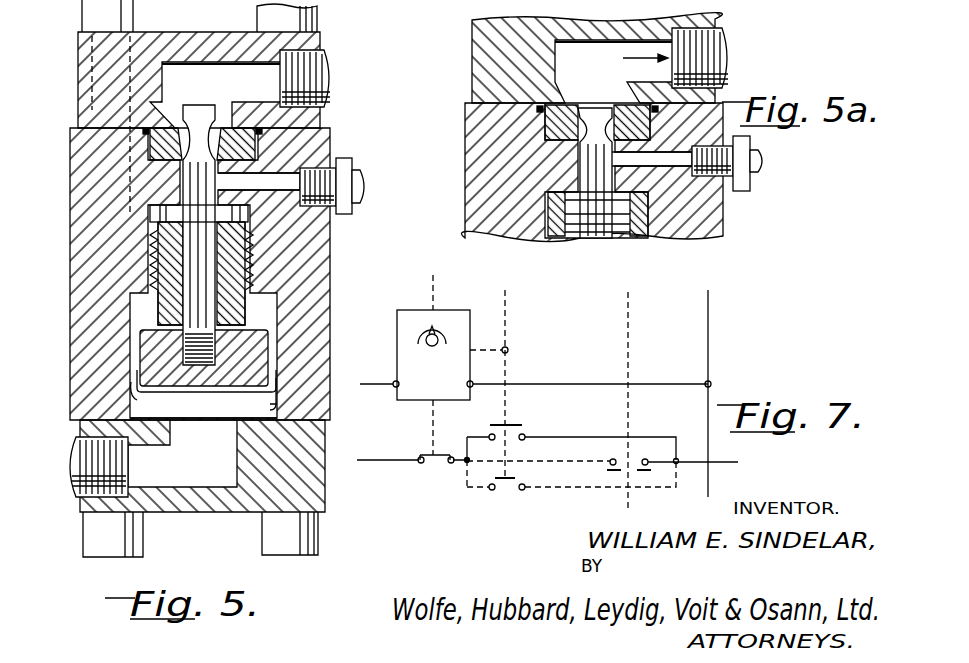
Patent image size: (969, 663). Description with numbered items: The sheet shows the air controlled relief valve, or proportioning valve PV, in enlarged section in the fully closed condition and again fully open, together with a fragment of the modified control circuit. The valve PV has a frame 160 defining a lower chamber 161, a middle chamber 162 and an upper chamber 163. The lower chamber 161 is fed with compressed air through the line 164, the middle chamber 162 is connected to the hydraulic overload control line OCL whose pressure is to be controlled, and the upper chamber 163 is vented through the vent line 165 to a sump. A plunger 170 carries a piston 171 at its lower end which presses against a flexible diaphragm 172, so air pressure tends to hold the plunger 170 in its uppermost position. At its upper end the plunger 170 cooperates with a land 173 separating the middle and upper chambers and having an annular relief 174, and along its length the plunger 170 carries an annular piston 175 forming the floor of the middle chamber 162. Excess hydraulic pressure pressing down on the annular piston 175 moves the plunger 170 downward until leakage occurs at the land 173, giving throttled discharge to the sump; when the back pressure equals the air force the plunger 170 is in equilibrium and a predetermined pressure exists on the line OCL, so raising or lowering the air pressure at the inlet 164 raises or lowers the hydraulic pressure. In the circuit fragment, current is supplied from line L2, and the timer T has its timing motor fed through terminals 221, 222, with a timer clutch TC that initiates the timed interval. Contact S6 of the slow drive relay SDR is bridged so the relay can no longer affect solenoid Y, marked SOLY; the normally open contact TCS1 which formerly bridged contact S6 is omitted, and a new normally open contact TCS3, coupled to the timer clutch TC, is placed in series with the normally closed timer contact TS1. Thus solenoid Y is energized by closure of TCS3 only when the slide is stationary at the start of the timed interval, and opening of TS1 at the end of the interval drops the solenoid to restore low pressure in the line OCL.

In FIG. 5, the frame 160 is at (78, 282).
In FIG. 5, the lower chamber 161 is at (218, 414).
In FIG. 5, the middle chamber 162 is at (225, 187).
In FIG. 5, the upper chamber 163 is at (235, 86).
In FIG. 5A, the upper chamber 163 is at (616, 82).
In FIG. 5, the air line 164 is at (70, 472).
In FIG. 5, the vent line 165 is at (325, 67).
In FIG. 5A, the vent line 165 is at (725, 42).
In FIG. 5, the plunger 170 is at (213, 283).
In FIG. 5A, the plunger 170 is at (618, 200).
In FIG. 5, the piston 171 is at (143, 355).
In FIG. 5, the flexible diaphragm 172 is at (130, 387).
In FIG. 5, the land 173 is at (182, 168).
In FIG. 5A, the land 173 is at (580, 153).
In FIG. 5, the annular relief 174 is at (178, 125).
In FIG. 5, the annular piston 175 is at (162, 219).
In FIG. 5A, the annular piston 175 is at (552, 220).
In FIG. 5, the proportioning valve PV is at (72, 153).
In FIG. 5A, the proportioning valve PV is at (724, 213).
In FIG. 5, the hydraulic overload control line OCL is at (367, 182).
In FIG. 5A, the hydraulic overload control line OCL is at (767, 173).
In FIG. 7, the timer T is at (405, 310).
In FIG. 7, the timer clutch TC is at (496, 369).
In FIG. 7, the slow drive relay SDR is at (620, 385).
In FIG. 7, the supply line L2 is at (710, 380).
In FIG. 7, the timer terminal 221 is at (395, 380).
In FIG. 7, the timer terminal 222 is at (473, 381).
In FIG. 7, the timer contact TS1 is at (412, 475).
In FIG. 7, the timer clutch contact TCS3 is at (571, 432).
In FIG. 7, the relay contact S6 is at (559, 451).
In FIG. 7, the solenoid Y SOLY is at (725, 464).
In FIG. 7, the timer clutch contact TCS1 is at (571, 490).